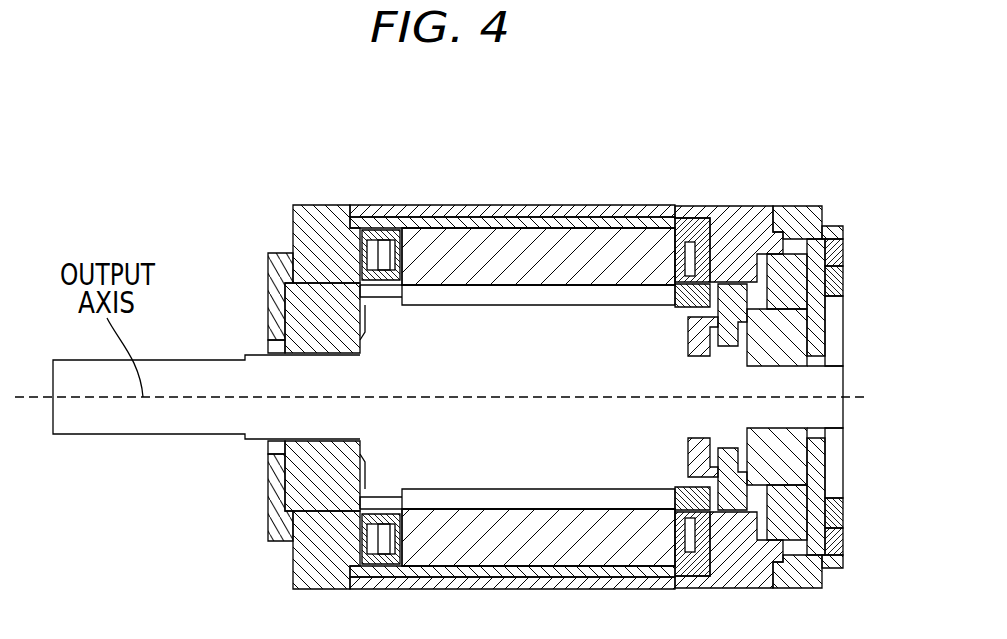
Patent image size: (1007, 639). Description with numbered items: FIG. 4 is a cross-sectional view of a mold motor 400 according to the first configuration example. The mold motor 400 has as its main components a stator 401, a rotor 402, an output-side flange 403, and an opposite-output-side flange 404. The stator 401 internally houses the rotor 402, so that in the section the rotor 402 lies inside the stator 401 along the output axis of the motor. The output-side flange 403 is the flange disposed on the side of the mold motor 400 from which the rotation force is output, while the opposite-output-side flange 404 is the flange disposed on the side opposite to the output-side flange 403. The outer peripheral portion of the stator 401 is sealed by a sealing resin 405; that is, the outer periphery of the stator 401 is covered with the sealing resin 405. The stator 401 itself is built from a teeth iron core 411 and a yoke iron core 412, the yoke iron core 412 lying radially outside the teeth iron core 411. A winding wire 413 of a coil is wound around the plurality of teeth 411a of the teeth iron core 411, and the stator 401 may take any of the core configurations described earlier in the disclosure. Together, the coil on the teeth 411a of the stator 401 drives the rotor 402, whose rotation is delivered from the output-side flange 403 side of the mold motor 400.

The mold motor 400 is at (643, 164).
The stator 401 is at (556, 245).
The rotor 402 is at (320, 412).
The output-side flange 403 is at (325, 228).
The opposite-output-side flange 404 is at (800, 225).
The sealing resin 405 is at (735, 227).
The teeth iron core 411 is at (485, 245).
The teeth 411a is at (414, 243).
The yoke iron core 412 is at (440, 212).
The winding wire 413 is at (384, 253).